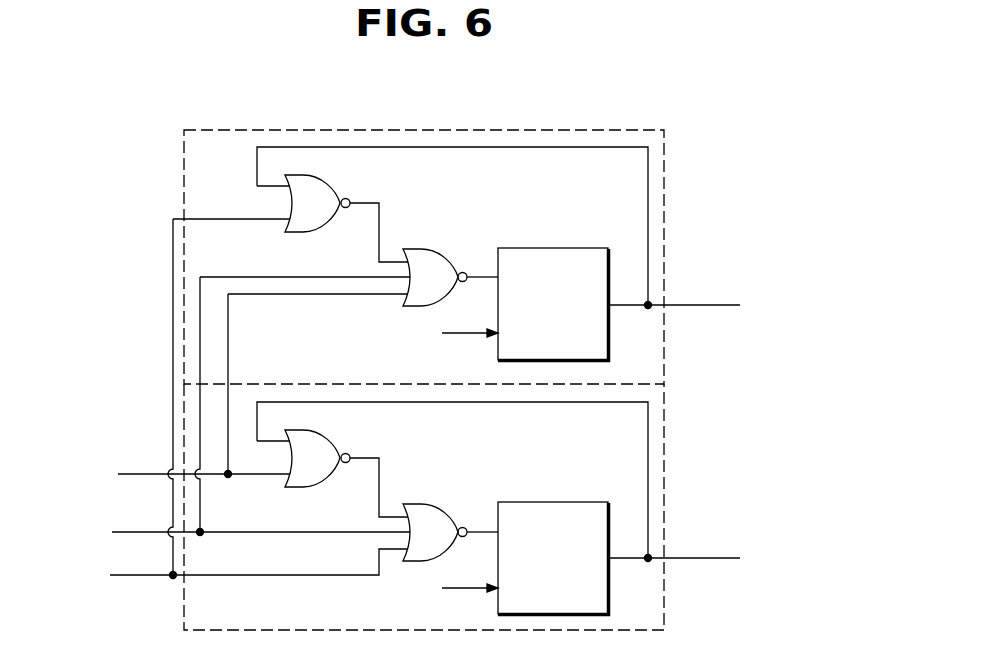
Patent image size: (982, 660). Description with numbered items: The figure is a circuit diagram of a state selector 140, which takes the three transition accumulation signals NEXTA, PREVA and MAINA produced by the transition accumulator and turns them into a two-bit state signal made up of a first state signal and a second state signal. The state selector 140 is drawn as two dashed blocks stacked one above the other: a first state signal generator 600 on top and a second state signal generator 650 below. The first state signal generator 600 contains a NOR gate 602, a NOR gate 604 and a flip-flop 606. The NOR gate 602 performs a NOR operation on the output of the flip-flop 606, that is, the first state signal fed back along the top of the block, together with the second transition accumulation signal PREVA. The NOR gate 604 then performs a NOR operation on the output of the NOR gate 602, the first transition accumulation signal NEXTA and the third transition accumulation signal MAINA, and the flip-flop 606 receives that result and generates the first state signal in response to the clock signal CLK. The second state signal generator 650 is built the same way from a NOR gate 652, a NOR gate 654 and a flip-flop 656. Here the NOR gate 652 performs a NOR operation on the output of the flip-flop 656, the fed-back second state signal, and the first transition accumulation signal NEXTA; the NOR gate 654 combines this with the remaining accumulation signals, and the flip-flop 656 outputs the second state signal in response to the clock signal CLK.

The state selector 140 is at (738, 126).
The first state signal generator 600 is at (664, 197).
The NOR gate 602 is at (334, 184).
The NOR gate 604 is at (446, 249).
The flip-flop 606 is at (557, 248).
The second state signal generator 650 is at (664, 463).
The NOR gate 652 is at (334, 442).
The NOR gate 654 is at (446, 504).
The flip-flop 656 is at (557, 502).